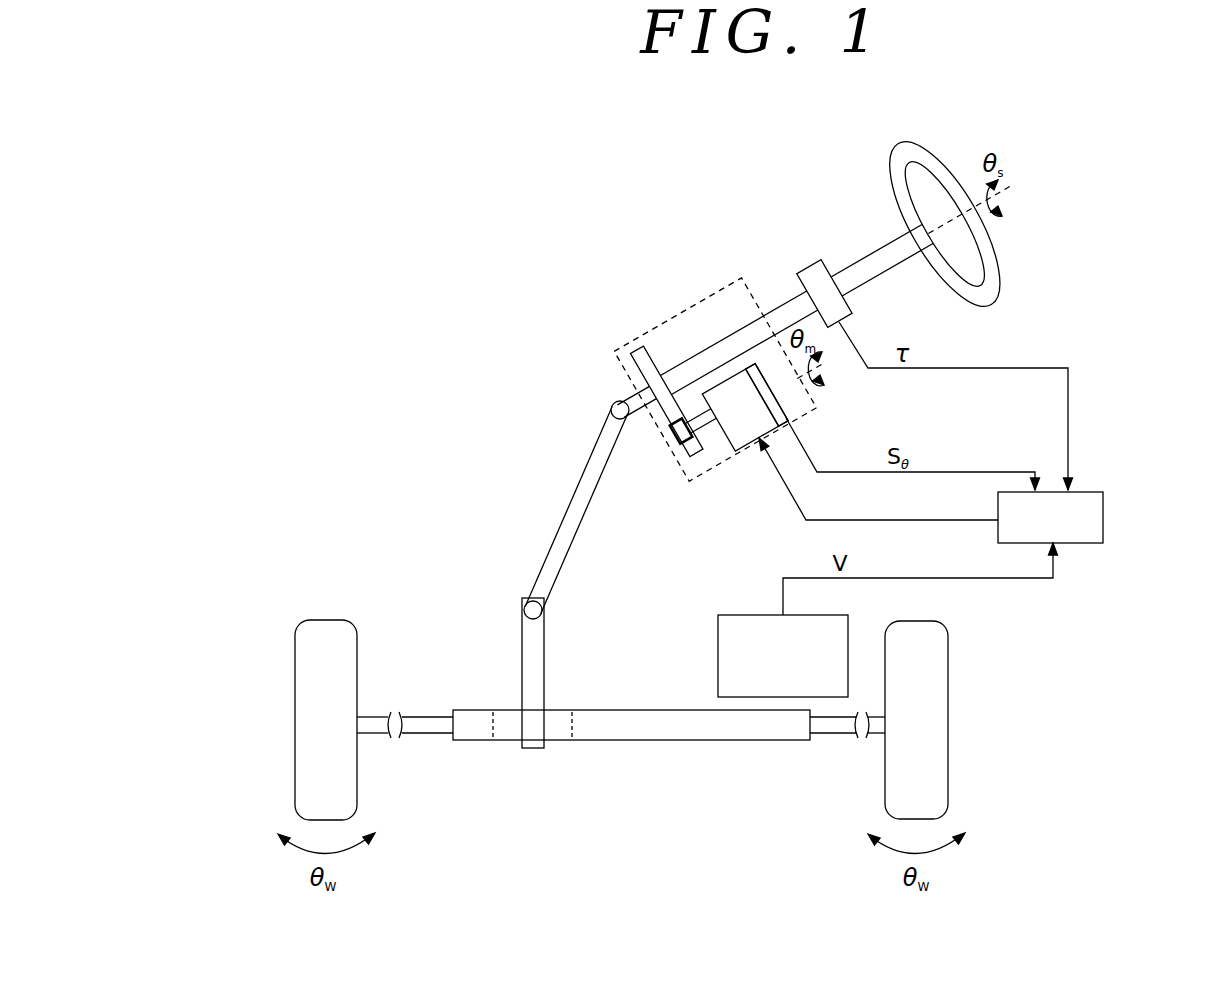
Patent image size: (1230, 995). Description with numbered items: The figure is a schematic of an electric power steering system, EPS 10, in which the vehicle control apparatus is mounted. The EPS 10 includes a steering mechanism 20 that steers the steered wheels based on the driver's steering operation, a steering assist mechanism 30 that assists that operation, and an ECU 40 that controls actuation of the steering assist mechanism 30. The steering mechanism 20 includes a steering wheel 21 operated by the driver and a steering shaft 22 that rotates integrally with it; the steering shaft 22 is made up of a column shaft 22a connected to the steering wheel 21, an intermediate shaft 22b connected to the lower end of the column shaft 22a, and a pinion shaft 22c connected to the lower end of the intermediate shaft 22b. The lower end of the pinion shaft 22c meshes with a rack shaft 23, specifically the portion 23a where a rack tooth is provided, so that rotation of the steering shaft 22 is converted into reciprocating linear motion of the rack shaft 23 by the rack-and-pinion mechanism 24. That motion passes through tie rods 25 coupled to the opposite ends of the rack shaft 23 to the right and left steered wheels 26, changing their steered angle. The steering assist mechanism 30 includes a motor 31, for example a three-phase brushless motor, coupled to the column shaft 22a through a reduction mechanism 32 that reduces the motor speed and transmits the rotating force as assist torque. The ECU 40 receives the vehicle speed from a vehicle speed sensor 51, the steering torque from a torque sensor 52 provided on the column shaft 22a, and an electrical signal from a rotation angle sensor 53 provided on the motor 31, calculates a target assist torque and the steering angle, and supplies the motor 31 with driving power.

The electric power steering system (EPS) 10 is at (1150, 177).
The steering mechanism 20 is at (993, 250).
The steering wheel 21 is at (927, 157).
The steering shaft 22 is at (547, 505).
The column shaft 22a is at (610, 397).
The intermediate shaft 22b is at (585, 487).
The pinion shaft 22c is at (508, 571).
The rack shaft 23 is at (653, 709).
The rack tooth portion 23a is at (558, 718).
The rack-and-pinion mechanism 24 is at (513, 702).
The tie rod 25 is at (428, 734).
The steered wheel 26 is at (295, 773).
The steering assist mechanism 30 is at (693, 306).
The motor 31 is at (727, 452).
The reduction mechanism 32 is at (680, 448).
The ECU 40 is at (1104, 518).
The vehicle speed sensor 51 is at (741, 613).
The torque sensor 52 is at (804, 270).
The rotation angle sensor 53 is at (790, 411).